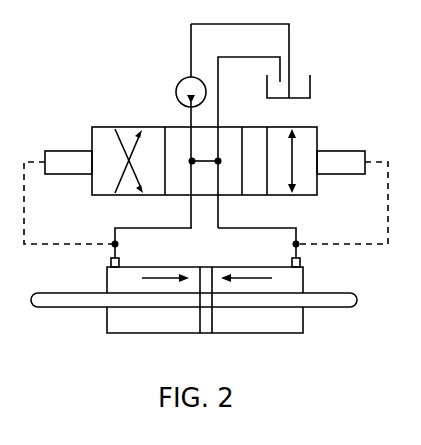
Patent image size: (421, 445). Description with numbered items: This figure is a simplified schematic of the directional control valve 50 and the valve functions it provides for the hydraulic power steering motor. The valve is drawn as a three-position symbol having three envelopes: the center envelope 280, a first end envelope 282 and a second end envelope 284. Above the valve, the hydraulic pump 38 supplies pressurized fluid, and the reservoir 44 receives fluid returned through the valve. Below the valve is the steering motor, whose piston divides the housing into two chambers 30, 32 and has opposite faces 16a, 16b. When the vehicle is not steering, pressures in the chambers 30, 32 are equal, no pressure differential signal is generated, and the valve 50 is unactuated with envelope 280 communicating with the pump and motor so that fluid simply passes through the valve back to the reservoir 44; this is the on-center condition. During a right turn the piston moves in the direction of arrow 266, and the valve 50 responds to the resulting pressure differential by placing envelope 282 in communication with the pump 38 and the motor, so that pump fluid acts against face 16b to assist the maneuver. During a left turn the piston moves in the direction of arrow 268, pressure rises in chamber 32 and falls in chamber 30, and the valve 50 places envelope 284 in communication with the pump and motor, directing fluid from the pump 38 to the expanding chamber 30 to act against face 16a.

The directional control valve 50 is at (86, 123).
The envelope 282 is at (108, 127).
The envelope 280 is at (181, 127).
The envelope 284 is at (308, 127).
The hydraulic pump 38 is at (186, 78).
The reservoir 44 is at (310, 86).
The arrow 268 is at (181, 263).
The arrow 266 is at (261, 263).
The chamber 30 is at (136, 324).
The chamber 32 is at (274, 327).
The face 16a is at (197, 323).
The face 16b is at (214, 323).